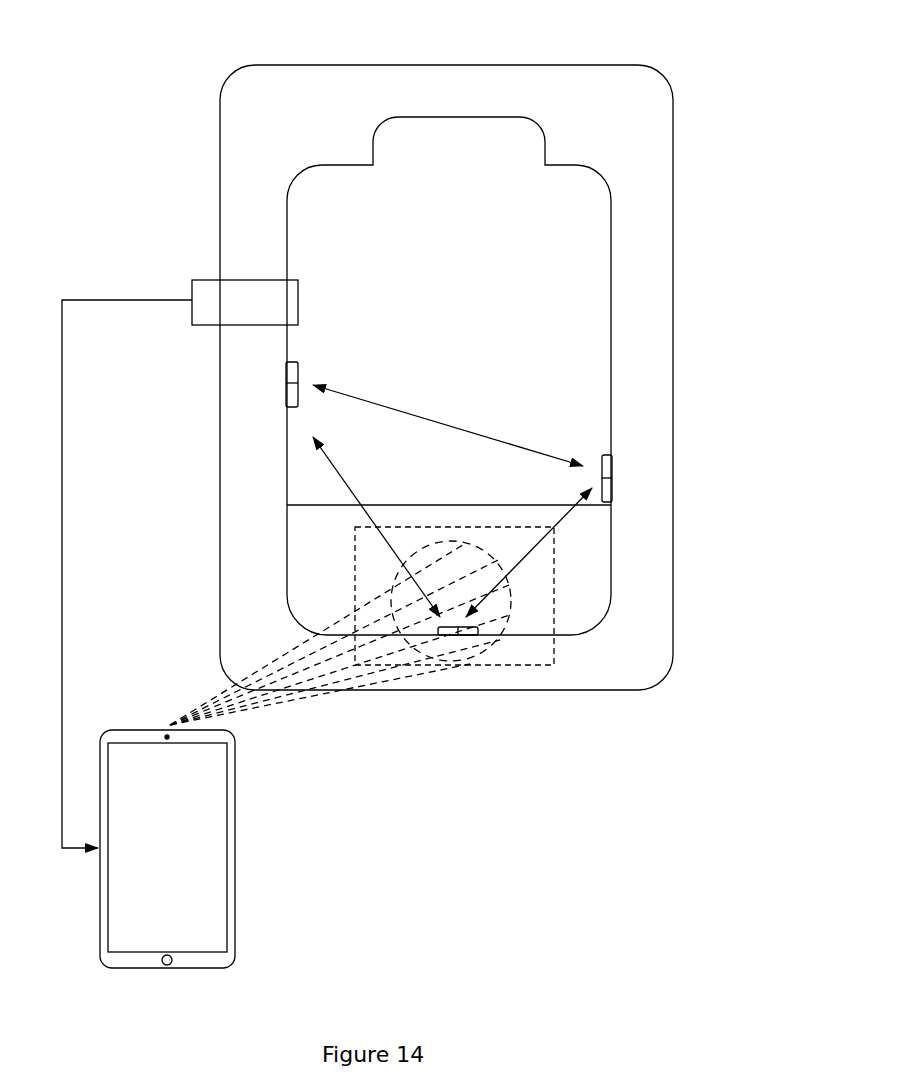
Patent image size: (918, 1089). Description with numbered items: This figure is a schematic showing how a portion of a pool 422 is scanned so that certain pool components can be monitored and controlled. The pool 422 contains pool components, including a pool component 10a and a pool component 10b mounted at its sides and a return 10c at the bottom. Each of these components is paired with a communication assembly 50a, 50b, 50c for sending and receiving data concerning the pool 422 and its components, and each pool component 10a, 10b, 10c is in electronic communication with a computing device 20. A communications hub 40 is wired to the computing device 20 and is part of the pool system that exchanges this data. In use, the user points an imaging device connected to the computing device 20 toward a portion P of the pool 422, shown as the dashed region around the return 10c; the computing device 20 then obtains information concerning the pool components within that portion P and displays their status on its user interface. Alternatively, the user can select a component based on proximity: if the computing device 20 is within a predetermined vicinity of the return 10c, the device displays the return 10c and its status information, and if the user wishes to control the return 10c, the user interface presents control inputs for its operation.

The pool 422 is at (520, 200).
The communications hub 40 is at (233, 290).
The pool component 10a is at (358, 367).
The communication assembly 50a is at (298, 364).
The pool component 10b is at (695, 431).
The communication assembly 50b is at (610, 473).
The return 10c is at (497, 680).
The communication assembly 50c is at (472, 635).
The portion of pool P is at (554, 608).
The computing device 20 is at (305, 755).